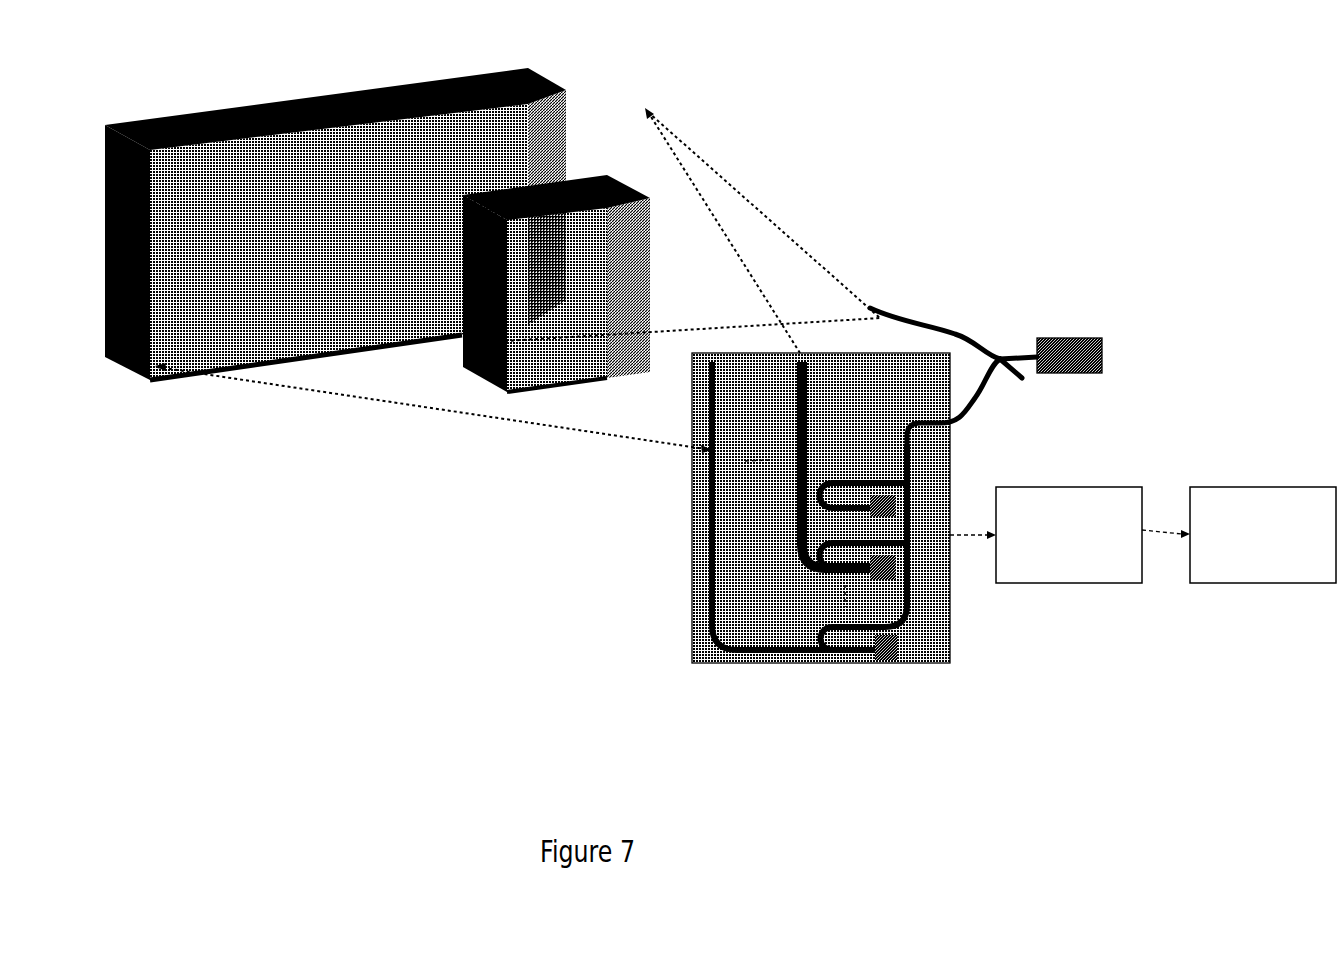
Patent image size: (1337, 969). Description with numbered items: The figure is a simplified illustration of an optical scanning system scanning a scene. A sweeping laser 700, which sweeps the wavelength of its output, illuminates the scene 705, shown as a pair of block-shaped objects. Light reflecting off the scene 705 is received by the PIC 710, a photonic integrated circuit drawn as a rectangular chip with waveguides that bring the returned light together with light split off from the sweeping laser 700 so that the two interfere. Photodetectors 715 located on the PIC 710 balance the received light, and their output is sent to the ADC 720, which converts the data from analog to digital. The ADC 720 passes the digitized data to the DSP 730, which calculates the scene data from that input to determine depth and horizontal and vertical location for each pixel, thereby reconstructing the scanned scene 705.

The sweeping laser 700 is at (1064, 373).
The scene 705 is at (377, 206).
The PIC 710 is at (821, 527).
The photodetectors 715 is at (866, 632).
The ADC 720 is at (1069, 535).
The DSP 730 is at (1263, 535).